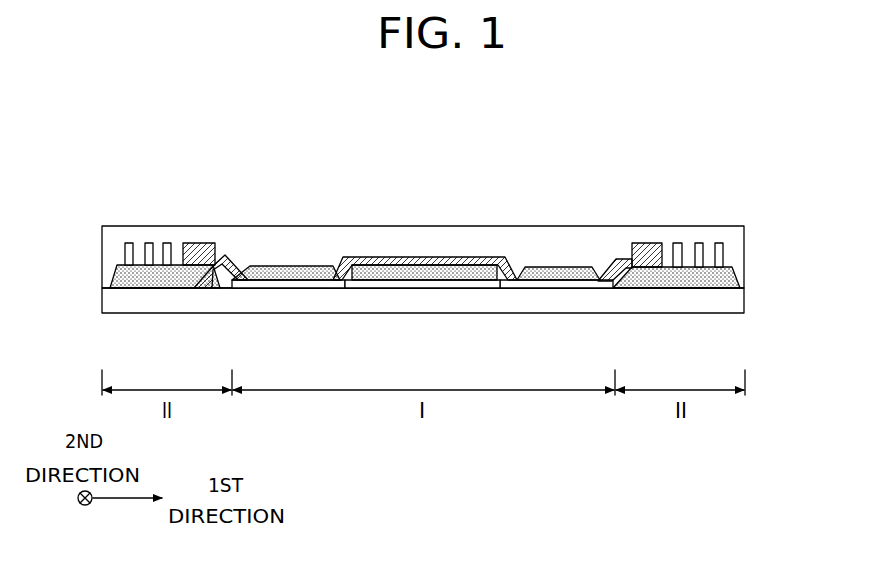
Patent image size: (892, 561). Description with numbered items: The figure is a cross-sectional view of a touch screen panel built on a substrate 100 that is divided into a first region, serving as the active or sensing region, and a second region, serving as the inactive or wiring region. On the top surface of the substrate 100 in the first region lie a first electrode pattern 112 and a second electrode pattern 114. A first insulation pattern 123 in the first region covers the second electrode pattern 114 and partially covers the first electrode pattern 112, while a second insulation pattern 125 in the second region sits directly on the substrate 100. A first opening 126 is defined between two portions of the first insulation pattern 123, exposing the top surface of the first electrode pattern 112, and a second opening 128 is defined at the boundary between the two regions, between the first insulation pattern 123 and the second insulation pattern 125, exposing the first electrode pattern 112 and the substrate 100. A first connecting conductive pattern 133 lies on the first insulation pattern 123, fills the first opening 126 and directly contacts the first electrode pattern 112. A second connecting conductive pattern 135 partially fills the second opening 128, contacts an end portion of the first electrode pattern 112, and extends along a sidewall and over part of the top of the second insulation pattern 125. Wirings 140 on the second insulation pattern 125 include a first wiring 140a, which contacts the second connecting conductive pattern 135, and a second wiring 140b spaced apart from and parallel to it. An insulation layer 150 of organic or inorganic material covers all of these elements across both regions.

The substrate 100 is at (743, 300).
The first electrode pattern 112 is at (308, 288).
The second electrode pattern 114 is at (417, 283).
The first insulation pattern 123 is at (283, 266).
The second insulation pattern 125 is at (743, 272).
The first opening 126 is at (338, 262).
The second opening 128 is at (227, 260).
The first connecting conductive pattern 133 is at (405, 262).
The second connecting conductive pattern 135 is at (606, 272).
The wirings 140 is at (679, 200).
The first wiring 140a is at (645, 245).
The second wiring 140b is at (714, 245).
The insulation layer 150 is at (742, 242).